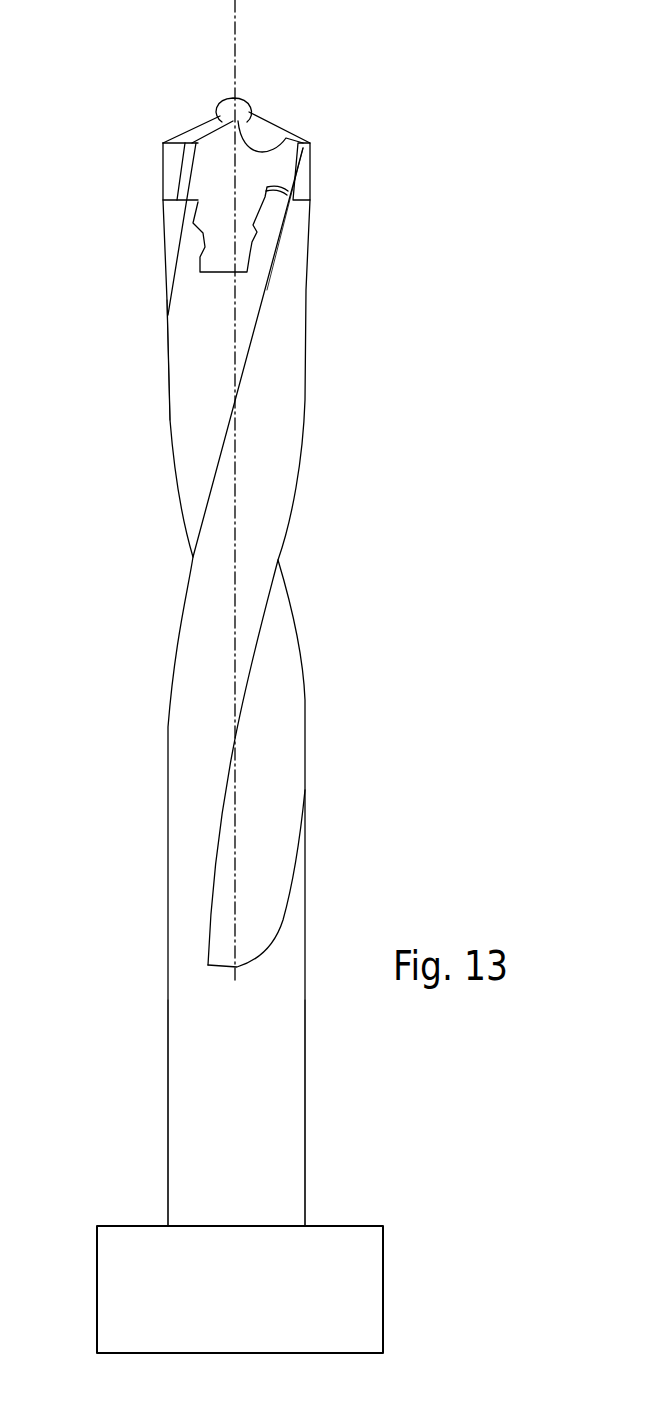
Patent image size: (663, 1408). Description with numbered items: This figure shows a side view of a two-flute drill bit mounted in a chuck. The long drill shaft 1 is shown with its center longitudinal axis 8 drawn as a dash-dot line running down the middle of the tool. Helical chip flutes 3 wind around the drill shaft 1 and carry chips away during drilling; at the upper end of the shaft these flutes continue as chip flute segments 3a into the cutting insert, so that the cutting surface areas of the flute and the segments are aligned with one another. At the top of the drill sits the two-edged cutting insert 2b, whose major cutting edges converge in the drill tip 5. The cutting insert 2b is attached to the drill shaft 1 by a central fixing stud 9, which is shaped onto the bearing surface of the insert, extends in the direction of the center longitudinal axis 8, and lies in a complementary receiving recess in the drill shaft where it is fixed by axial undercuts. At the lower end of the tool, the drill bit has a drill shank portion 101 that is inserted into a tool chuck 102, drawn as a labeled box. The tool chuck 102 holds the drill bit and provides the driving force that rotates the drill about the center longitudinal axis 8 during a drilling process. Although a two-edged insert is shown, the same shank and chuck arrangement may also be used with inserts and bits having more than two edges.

The drill shaft 1 is at (290, 450).
The two-edged cutting insert 2b is at (268, 165).
The chip flute 3 is at (192, 382).
The chip flute segment 3a is at (225, 207).
The drill tip 5 is at (236, 99).
The center longitudinal axis 8 is at (236, 26).
The fixing stud 9 is at (222, 260).
The drill shank portion 101 is at (183, 1103).
The tool chuck 102 is at (372, 1287).